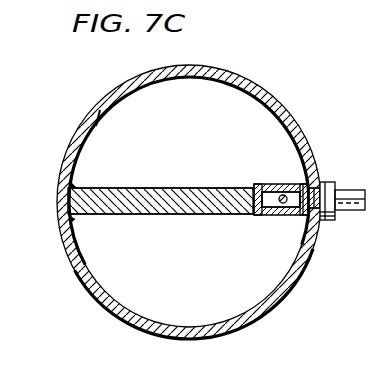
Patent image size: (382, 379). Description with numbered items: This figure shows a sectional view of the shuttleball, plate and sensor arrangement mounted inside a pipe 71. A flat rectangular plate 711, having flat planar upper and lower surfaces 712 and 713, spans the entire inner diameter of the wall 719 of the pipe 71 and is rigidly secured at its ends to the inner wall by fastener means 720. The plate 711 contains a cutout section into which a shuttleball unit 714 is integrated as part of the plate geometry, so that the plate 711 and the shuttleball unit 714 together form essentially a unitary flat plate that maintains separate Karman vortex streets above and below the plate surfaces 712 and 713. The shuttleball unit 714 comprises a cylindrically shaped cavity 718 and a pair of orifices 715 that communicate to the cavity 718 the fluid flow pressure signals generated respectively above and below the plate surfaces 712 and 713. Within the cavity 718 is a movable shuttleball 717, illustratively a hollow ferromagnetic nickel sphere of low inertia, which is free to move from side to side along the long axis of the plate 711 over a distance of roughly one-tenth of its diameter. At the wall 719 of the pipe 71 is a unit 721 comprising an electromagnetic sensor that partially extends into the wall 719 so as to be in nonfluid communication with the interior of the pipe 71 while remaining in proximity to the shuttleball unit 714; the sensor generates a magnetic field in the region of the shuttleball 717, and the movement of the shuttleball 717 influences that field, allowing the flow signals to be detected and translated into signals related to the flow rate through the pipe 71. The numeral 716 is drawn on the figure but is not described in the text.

The pipe 71 is at (230, 73).
The plate 711 is at (160, 185).
The upper surface 712 is at (120, 188).
The lower surface 713 is at (110, 215).
The shuttleball unit 714 is at (244, 183).
The orifice 715 is at (270, 184).
The block end wall 716 is at (297, 215).
The shuttleball 717 is at (281, 203).
The cavity 718 is at (256, 208).
The wall 719 is at (103, 108).
The fastener means 720 is at (71, 218).
The unit 721 is at (328, 222).